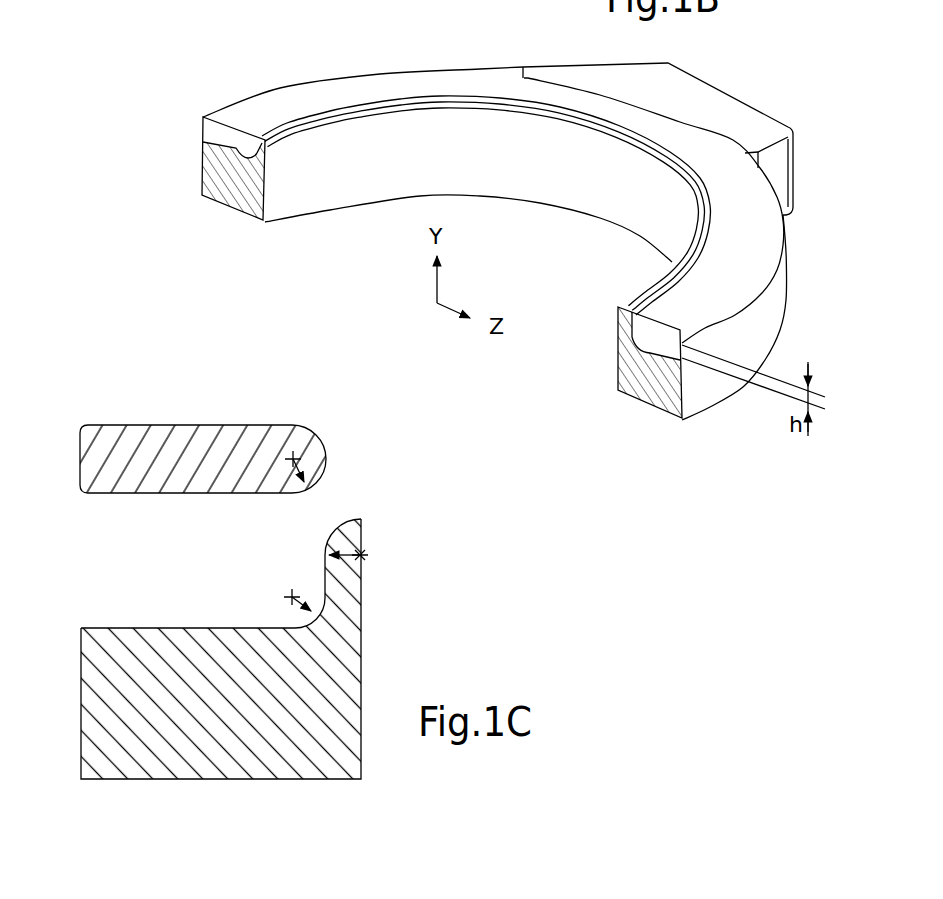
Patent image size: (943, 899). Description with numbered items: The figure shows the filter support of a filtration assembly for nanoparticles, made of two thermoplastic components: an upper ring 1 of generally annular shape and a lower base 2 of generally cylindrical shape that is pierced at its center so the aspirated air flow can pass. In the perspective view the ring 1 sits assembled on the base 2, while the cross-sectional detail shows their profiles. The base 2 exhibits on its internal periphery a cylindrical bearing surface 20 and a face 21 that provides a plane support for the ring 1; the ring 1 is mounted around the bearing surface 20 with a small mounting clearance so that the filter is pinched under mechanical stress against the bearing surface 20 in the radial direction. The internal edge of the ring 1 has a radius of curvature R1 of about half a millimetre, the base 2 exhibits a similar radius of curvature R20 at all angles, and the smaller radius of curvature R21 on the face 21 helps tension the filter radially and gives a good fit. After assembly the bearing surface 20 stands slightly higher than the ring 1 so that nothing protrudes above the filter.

In FIG. 1B, the ring 1 is at (351, 92).
In FIG. 1C, the ring 1 is at (133, 435).
In FIG. 1B, the base 2 is at (314, 181).
In FIG. 1C, the base 2 is at (81, 665).
In FIG. 1C, the cylindrical bearing surface 20 is at (362, 536).
In FIG. 1C, the face 21 is at (148, 627).
In FIG. 1C, the radius of curvature R1 is at (320, 436).
In FIG. 1C, the radius of curvature R21 is at (308, 598).
In FIG. 1C, the radius of curvature R20 is at (347, 562).